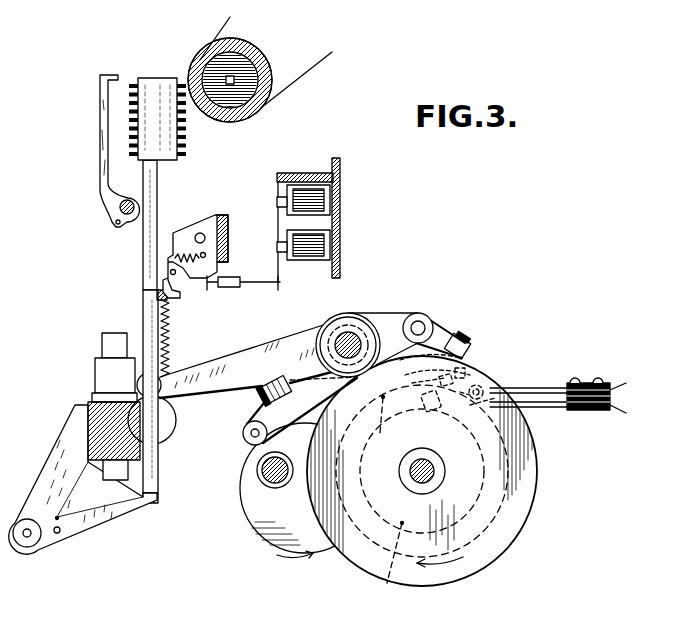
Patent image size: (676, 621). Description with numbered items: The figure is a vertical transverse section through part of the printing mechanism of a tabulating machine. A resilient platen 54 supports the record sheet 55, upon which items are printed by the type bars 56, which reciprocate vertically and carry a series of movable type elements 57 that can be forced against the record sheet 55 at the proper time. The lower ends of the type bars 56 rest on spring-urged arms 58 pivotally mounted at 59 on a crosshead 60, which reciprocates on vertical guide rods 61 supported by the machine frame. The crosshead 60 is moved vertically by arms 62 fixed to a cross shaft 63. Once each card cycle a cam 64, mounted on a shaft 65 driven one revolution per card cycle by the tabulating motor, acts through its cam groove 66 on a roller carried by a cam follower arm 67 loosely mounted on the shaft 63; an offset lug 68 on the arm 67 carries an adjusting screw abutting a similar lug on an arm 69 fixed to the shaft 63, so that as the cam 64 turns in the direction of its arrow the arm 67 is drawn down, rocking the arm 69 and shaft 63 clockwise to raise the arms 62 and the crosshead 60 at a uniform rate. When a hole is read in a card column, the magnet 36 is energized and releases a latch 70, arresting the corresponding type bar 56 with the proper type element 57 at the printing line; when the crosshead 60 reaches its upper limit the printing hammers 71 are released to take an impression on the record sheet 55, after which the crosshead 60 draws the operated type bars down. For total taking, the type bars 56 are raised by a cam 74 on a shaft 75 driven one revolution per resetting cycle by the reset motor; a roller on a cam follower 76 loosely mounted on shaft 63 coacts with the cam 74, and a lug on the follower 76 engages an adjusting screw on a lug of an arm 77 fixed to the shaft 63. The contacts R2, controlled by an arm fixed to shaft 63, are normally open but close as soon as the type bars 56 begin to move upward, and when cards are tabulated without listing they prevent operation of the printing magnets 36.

The printing magnet 36 is at (307, 193).
The resilient platen 54 is at (258, 63).
The record sheet 55 is at (230, 17).
The type bar 56 is at (153, 78).
The type element 57 is at (129, 107).
The spring-urged arm 58 is at (100, 520).
The pivot 59 is at (27, 537).
The crosshead 60 is at (110, 417).
The vertical guide rod 61 is at (112, 337).
The arm 62 is at (300, 335).
The cross shaft 63 is at (353, 343).
The cam 64 is at (477, 560).
The shaft 65 is at (437, 472).
The cam groove 66 is at (391, 565).
The cam follower arm 67 is at (473, 362).
The offset lug 68 is at (435, 401).
The arm 69 is at (388, 423).
The latch 70 is at (182, 292).
The printing hammer 71 is at (100, 147).
The cam 74 is at (262, 495).
The shaft 75 is at (262, 465).
The cam follower 76 is at (265, 415).
The arm 77 is at (300, 368).
The contacts R2 is at (522, 393).